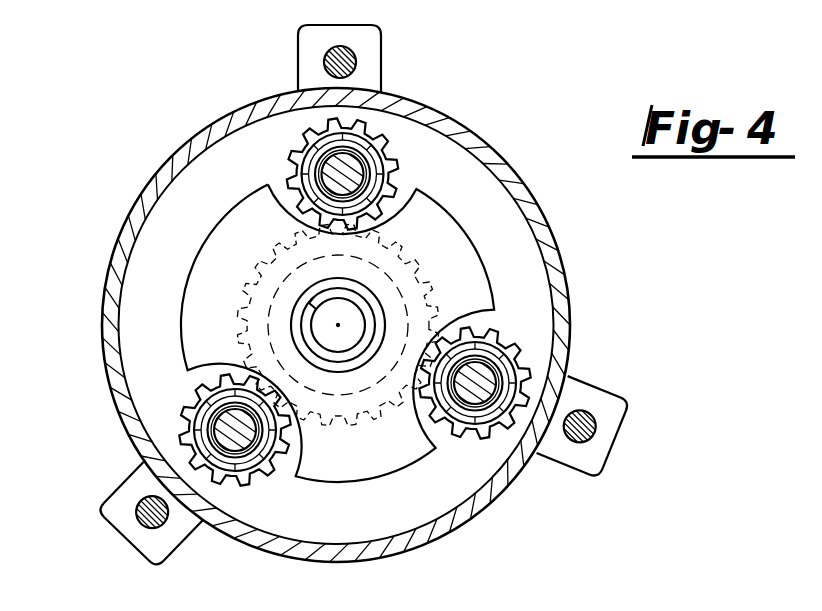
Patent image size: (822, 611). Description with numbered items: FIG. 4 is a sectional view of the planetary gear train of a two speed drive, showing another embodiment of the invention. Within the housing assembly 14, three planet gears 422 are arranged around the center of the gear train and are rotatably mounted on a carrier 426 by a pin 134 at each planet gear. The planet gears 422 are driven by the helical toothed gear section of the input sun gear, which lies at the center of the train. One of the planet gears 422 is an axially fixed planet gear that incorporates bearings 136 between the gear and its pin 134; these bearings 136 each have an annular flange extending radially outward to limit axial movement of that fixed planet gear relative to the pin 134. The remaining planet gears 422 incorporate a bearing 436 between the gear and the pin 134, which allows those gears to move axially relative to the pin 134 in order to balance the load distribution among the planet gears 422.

The housing assembly 14 is at (460, 116).
The planet gears 422 is at (296, 146).
The bearings 136 is at (372, 170).
The pin 134 is at (500, 378).
The bearing 436 is at (216, 412).
The carrier 426 is at (353, 455).